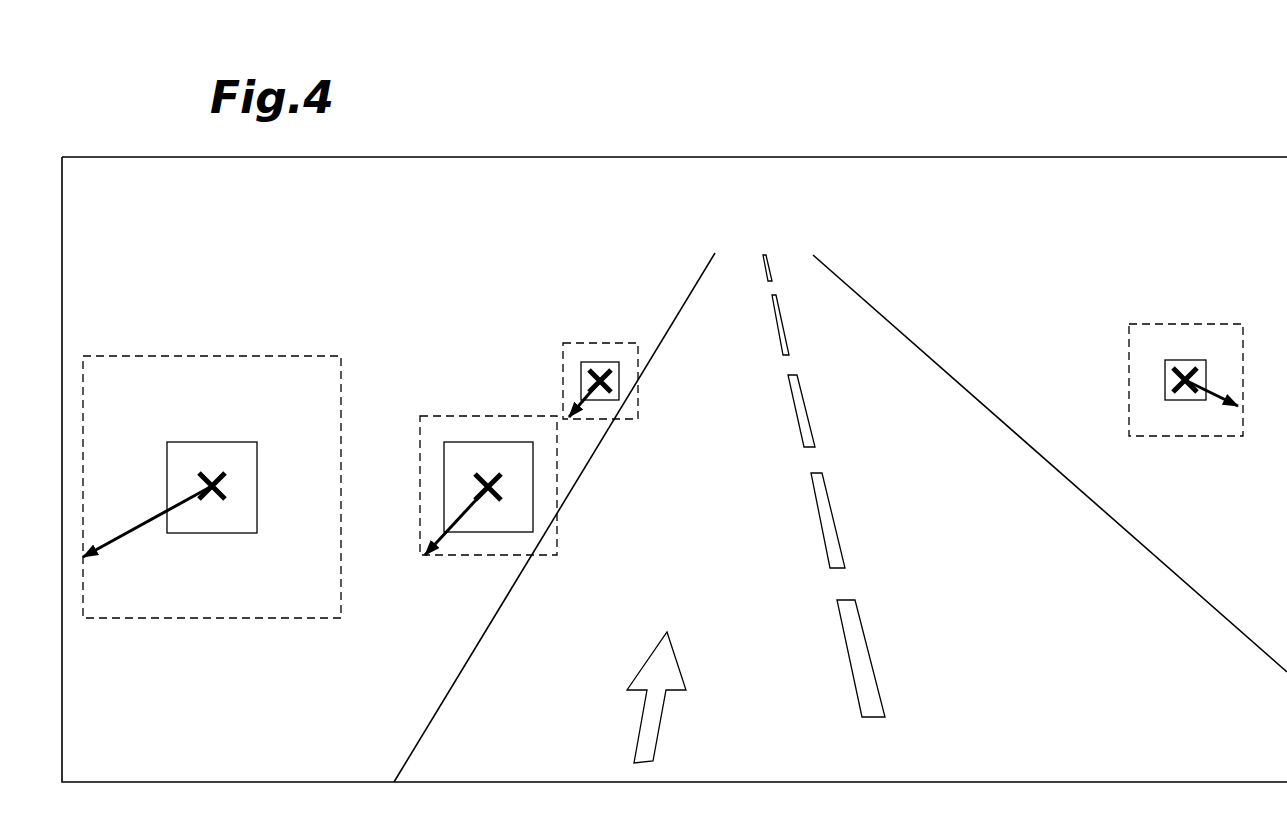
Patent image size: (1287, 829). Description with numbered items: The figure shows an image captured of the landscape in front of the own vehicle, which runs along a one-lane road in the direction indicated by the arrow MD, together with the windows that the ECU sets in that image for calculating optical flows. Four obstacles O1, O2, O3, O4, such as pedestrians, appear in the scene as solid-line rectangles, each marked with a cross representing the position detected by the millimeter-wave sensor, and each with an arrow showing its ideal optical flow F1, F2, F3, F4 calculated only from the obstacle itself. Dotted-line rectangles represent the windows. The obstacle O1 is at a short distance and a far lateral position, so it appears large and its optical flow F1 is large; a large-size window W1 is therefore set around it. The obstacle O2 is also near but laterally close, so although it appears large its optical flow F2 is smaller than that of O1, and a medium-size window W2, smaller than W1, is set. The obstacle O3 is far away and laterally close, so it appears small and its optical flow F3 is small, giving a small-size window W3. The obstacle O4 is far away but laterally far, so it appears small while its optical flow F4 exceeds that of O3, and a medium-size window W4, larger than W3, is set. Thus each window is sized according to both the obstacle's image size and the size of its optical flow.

The large-size window W1 is at (127, 355).
The obstacle O1 is at (187, 441).
The optical flow F1 is at (140, 520).
The medium-size window W2 is at (433, 415).
The obstacle O2 is at (487, 441).
The optical flow F2 is at (436, 538).
The small-size window W3 is at (619, 342).
The obstacle O3 is at (588, 360).
The optical flow F3 is at (577, 406).
The medium-size window W4 is at (1163, 322).
The obstacle O4 is at (1193, 360).
The optical flow F4 is at (1220, 392).
The arrow indicating running direction MD is at (640, 731).